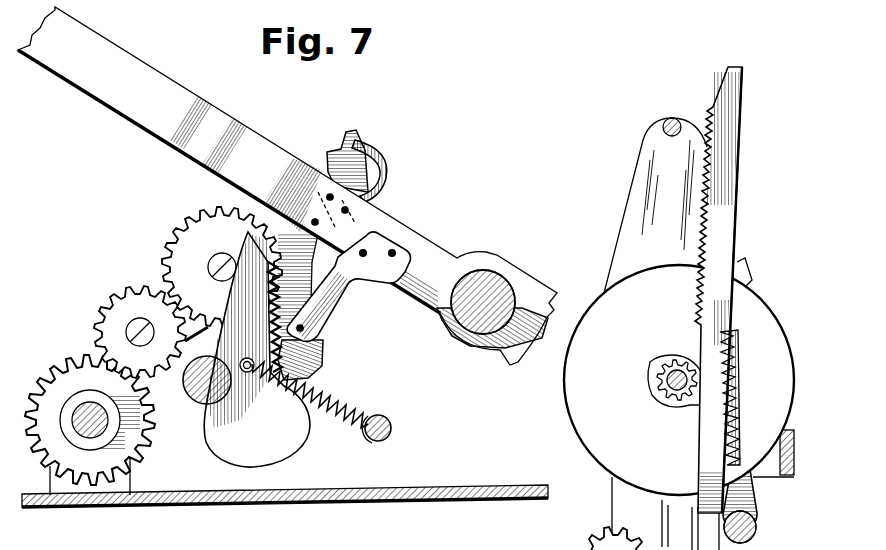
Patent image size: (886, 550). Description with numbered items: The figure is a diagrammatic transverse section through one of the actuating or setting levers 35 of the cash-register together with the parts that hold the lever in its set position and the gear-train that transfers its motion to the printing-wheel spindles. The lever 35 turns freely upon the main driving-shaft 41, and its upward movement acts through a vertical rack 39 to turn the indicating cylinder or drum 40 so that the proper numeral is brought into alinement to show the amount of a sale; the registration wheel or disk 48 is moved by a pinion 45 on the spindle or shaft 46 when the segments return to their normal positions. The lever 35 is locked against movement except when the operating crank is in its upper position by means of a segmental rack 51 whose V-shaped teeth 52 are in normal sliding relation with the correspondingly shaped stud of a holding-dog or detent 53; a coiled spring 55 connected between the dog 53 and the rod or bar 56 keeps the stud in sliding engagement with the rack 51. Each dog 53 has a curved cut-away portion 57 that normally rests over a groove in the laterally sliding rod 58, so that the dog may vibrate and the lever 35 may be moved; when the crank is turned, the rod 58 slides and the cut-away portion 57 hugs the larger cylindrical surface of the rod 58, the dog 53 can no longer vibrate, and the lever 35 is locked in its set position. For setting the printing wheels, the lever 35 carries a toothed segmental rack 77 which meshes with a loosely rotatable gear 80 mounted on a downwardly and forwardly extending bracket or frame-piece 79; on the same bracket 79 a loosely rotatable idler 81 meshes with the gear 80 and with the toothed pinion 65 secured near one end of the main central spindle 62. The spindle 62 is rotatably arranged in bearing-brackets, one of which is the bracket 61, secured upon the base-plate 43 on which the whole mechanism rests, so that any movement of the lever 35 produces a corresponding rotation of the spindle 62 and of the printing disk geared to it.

The actuating or setting lever 35 is at (138, 66).
The vertical rack 39 is at (723, 237).
The indicating cylinder or drum 40 is at (679, 380).
The main driving-shaft 41 is at (482, 290).
The base-plate 43 is at (283, 508).
The pinion 45 is at (591, 460).
The spindle or shaft 46 is at (553, 549).
The registration wheel or disk 48 is at (601, 536).
The segmental rack 51 is at (362, 152).
The V-shaped teeth 52 is at (330, 157).
The holding-dog or detent 53 is at (225, 442).
The coiled spring 55 is at (337, 404).
The rod or bar 56 is at (391, 428).
The curved cut-away portion 57 is at (247, 374).
The rod 58 is at (192, 390).
The bearing-bracket 61 is at (117, 488).
The main central spindle 62 is at (130, 449).
The toothed pinion 65 is at (101, 408).
The toothed segmental rack 77 is at (384, 160).
The bracket or frame-piece 79 is at (167, 288).
The gear 80 is at (193, 231).
The idler 81 is at (120, 307).